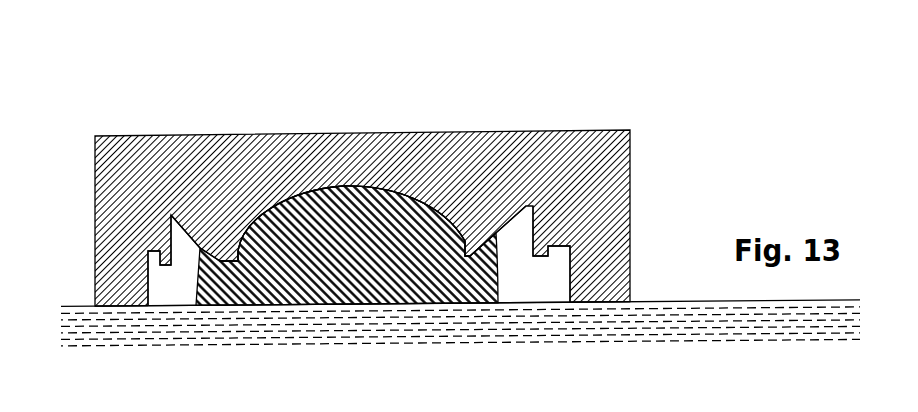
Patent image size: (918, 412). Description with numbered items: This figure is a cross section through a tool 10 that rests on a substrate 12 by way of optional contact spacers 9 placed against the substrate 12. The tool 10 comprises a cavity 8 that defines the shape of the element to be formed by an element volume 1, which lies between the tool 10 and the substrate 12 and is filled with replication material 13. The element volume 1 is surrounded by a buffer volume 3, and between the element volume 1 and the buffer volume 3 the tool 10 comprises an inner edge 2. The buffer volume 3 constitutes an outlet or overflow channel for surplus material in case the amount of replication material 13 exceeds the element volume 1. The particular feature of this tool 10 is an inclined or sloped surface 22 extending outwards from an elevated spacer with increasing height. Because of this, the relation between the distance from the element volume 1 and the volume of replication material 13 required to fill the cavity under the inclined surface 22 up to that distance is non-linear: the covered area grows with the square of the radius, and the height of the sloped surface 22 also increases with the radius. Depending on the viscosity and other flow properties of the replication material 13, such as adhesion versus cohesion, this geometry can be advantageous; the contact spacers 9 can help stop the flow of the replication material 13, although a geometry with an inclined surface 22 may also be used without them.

The element volume 1 is at (308, 287).
The inner edge 2 is at (222, 245).
The buffer volume 3 is at (175, 288).
The cavity 8 is at (279, 136).
The contact spacer 9 is at (107, 288).
The tool 10 is at (612, 156).
The substrate 12 is at (381, 332).
The replication material 13 is at (342, 187).
The inclined surface 22 is at (189, 216).